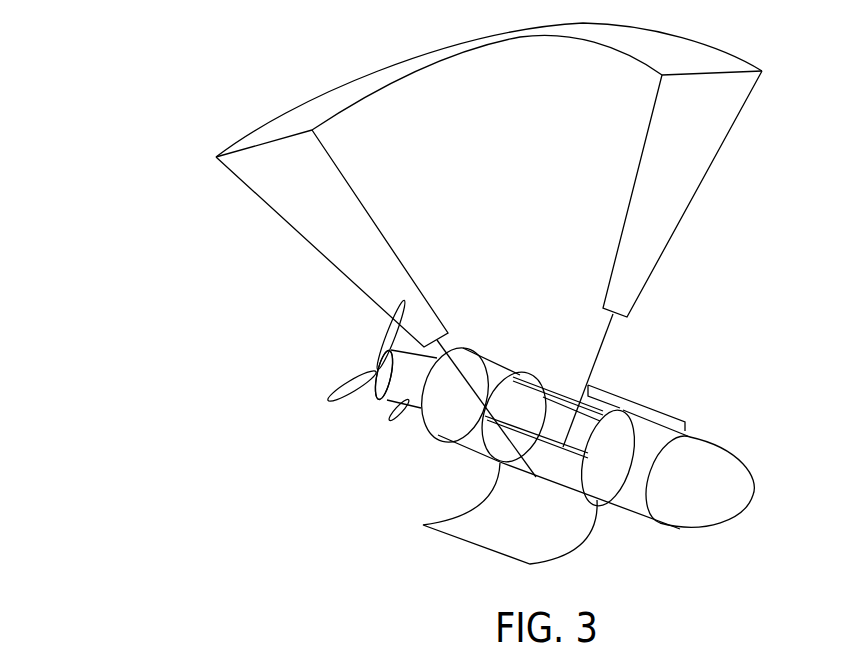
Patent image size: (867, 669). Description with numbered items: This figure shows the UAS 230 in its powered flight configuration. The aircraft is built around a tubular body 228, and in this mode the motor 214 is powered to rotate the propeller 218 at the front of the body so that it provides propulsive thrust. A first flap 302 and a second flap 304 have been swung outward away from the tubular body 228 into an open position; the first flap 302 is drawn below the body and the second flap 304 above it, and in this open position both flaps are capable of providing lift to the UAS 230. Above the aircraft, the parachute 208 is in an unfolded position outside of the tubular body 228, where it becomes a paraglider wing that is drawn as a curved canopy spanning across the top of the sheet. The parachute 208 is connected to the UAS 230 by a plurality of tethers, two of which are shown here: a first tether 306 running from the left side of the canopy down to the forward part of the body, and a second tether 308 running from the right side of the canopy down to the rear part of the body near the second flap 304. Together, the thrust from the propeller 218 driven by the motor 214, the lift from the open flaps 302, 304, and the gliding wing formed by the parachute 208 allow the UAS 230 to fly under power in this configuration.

The UAS 230 is at (118, 152).
The parachute 208 is at (309, 100).
The propeller 218 is at (325, 372).
The motor 214 is at (395, 382).
The first tether 306 is at (443, 345).
The second tether 308 is at (600, 343).
The second flap 304 is at (603, 403).
The tubular body 228 is at (640, 438).
The first flap 302 is at (540, 543).